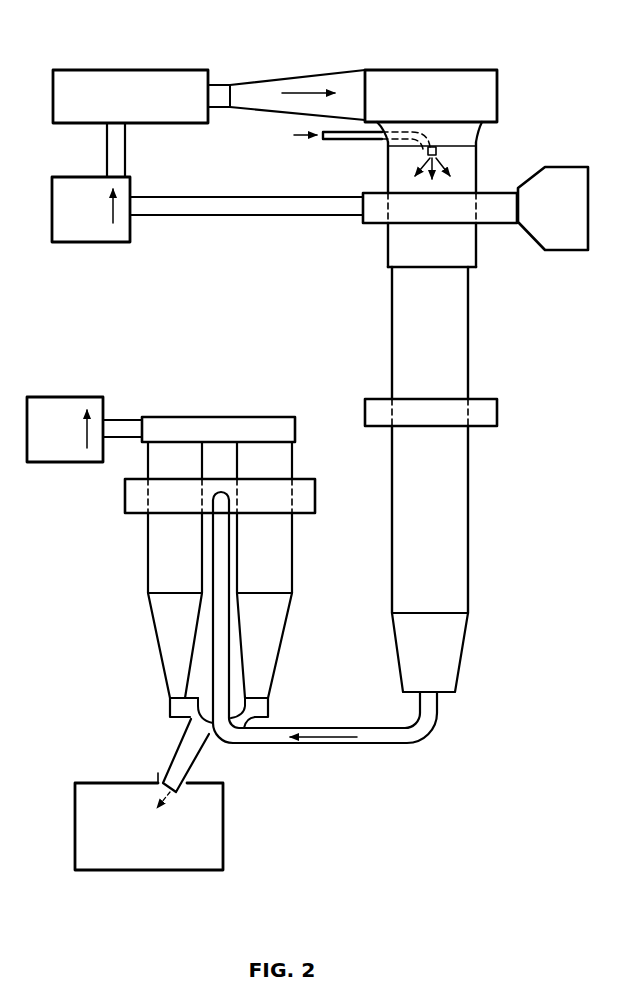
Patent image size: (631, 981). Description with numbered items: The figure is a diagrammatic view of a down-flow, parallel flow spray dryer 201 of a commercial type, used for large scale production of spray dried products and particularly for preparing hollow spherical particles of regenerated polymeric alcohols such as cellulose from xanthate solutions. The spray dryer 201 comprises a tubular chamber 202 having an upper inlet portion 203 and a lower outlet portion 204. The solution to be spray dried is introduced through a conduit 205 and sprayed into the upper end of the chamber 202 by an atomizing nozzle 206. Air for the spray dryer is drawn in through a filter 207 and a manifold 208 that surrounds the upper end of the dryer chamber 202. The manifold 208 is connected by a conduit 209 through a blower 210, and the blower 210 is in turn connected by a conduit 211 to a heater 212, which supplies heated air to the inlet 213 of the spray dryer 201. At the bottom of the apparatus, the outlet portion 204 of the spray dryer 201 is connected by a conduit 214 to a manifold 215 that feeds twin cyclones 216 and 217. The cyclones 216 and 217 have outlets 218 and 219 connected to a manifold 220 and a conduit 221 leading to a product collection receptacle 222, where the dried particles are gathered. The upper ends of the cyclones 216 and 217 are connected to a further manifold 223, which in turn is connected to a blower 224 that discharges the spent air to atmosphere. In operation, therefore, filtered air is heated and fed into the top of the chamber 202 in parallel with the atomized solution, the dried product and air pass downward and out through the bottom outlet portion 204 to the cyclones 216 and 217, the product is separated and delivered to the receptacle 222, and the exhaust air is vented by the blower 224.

The spray dryer 201 is at (378, 305).
The tubular chamber 202 is at (463, 377).
The upper inlet portion 203 is at (476, 142).
The lower outlet portion 204 is at (447, 688).
The conduit 205 is at (372, 136).
The atomizing nozzle 206 is at (437, 153).
The filter 207 is at (563, 240).
The manifold 208 is at (495, 216).
The conduit 209 is at (278, 212).
The blower 210 is at (77, 235).
The conduit 211 is at (107, 152).
The heater 212 is at (158, 75).
The inlet 213 is at (350, 78).
The conduit 214 is at (313, 743).
The manifold 215 is at (306, 500).
The cyclone 216 is at (148, 573).
The cyclone 217 is at (290, 573).
The outlet 218 is at (168, 680).
The outlet 219 is at (265, 683).
The manifold 220 is at (192, 720).
The conduit 221 is at (194, 750).
The product collection receptacle 222 is at (217, 848).
The manifold 223 is at (256, 423).
The blower 224 is at (45, 458).